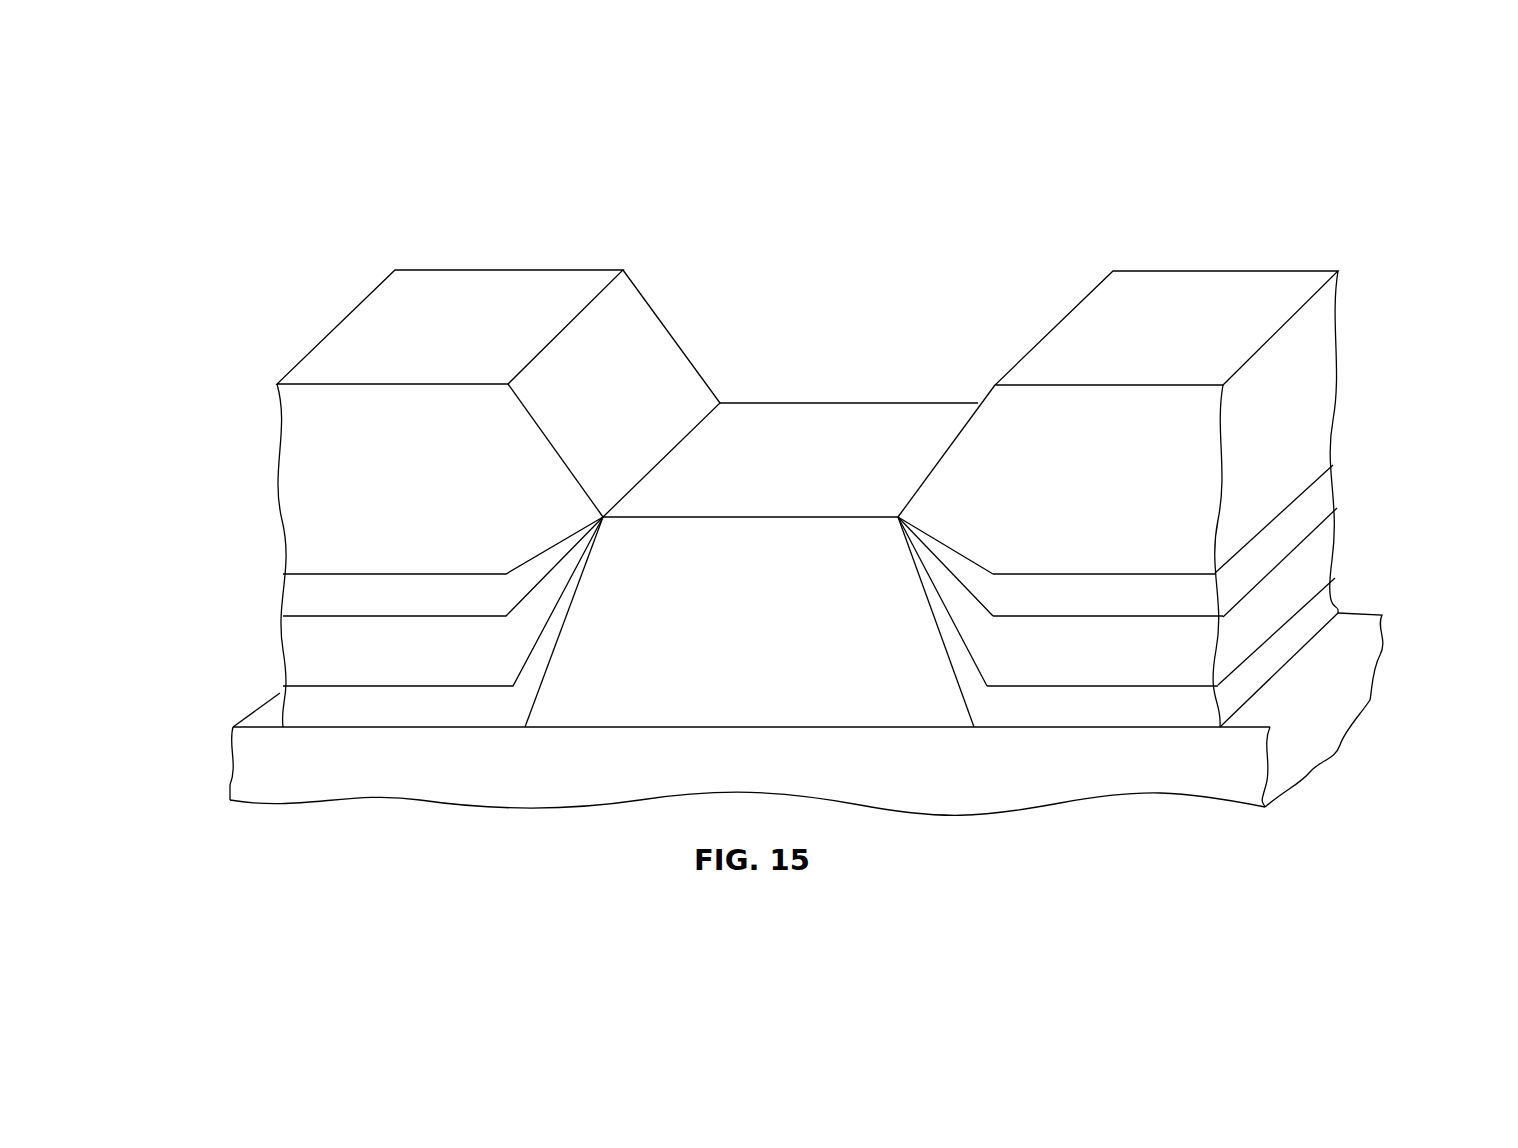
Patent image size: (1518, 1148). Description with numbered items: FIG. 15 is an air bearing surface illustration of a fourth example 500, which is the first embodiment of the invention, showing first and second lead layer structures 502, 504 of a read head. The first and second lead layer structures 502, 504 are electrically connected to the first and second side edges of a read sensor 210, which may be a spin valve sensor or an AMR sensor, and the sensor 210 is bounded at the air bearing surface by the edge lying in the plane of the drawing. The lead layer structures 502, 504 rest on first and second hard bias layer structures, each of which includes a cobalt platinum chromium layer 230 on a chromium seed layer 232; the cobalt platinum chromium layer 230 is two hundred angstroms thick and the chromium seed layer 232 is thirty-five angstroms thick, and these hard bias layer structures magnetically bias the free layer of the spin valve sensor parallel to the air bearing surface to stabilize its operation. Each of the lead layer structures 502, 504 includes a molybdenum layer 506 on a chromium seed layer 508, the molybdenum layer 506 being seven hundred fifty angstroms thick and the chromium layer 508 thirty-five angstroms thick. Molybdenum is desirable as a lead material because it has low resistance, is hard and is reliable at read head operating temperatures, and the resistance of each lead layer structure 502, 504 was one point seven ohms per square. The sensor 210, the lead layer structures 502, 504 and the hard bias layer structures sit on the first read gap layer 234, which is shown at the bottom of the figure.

The fourth example 500 is at (904, 251).
The first lead layer structure 502 is at (502, 300).
The second lead layer structure 504 is at (1204, 301).
The read sensor 210 is at (793, 427).
The molybdenum layer 506 is at (285, 472).
The chromium seed layer 508 is at (285, 593).
The cobalt platinum chromium layer 230 is at (285, 640).
The chromium seed layer 232 is at (285, 708).
The first read gap layer 234 is at (1353, 692).